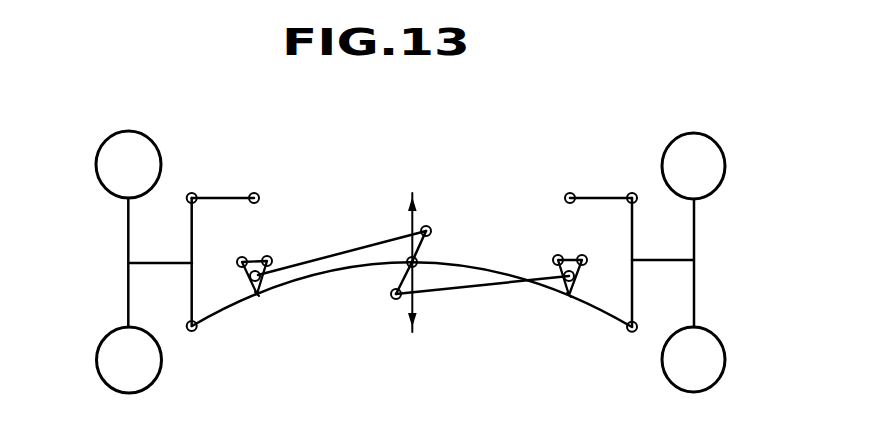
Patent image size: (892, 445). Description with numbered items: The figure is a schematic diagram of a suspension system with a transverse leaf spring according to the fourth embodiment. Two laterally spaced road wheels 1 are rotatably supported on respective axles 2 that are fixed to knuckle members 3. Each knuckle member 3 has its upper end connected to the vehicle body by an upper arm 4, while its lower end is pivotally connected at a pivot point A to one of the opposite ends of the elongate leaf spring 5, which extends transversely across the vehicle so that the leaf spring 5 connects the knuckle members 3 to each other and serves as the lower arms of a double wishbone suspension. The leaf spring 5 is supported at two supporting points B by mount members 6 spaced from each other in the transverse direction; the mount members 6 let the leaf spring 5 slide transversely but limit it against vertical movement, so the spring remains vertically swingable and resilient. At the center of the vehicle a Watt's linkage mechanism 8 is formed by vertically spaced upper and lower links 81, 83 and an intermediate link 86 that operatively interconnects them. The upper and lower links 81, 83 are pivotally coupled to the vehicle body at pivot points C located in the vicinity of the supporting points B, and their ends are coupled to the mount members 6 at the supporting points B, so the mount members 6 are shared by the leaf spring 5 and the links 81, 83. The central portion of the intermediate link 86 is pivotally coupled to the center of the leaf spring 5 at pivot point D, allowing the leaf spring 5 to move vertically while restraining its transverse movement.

The road wheel 1 is at (96, 364).
The axle 2 is at (160, 262).
The knuckle member 3 is at (193, 241).
The upper arm 4 is at (224, 195).
The leaf spring 5 is at (353, 269).
The mount member 6 is at (246, 278).
The Watt's linkage mechanism 8 is at (443, 207).
The upper link 81 is at (348, 250).
The lower link 83 is at (493, 287).
The intermediate link 86 is at (386, 291).
The pivot point A is at (193, 332).
The supporting point B is at (257, 298).
The pivot point C is at (265, 273).
The pivot point D is at (420, 262).